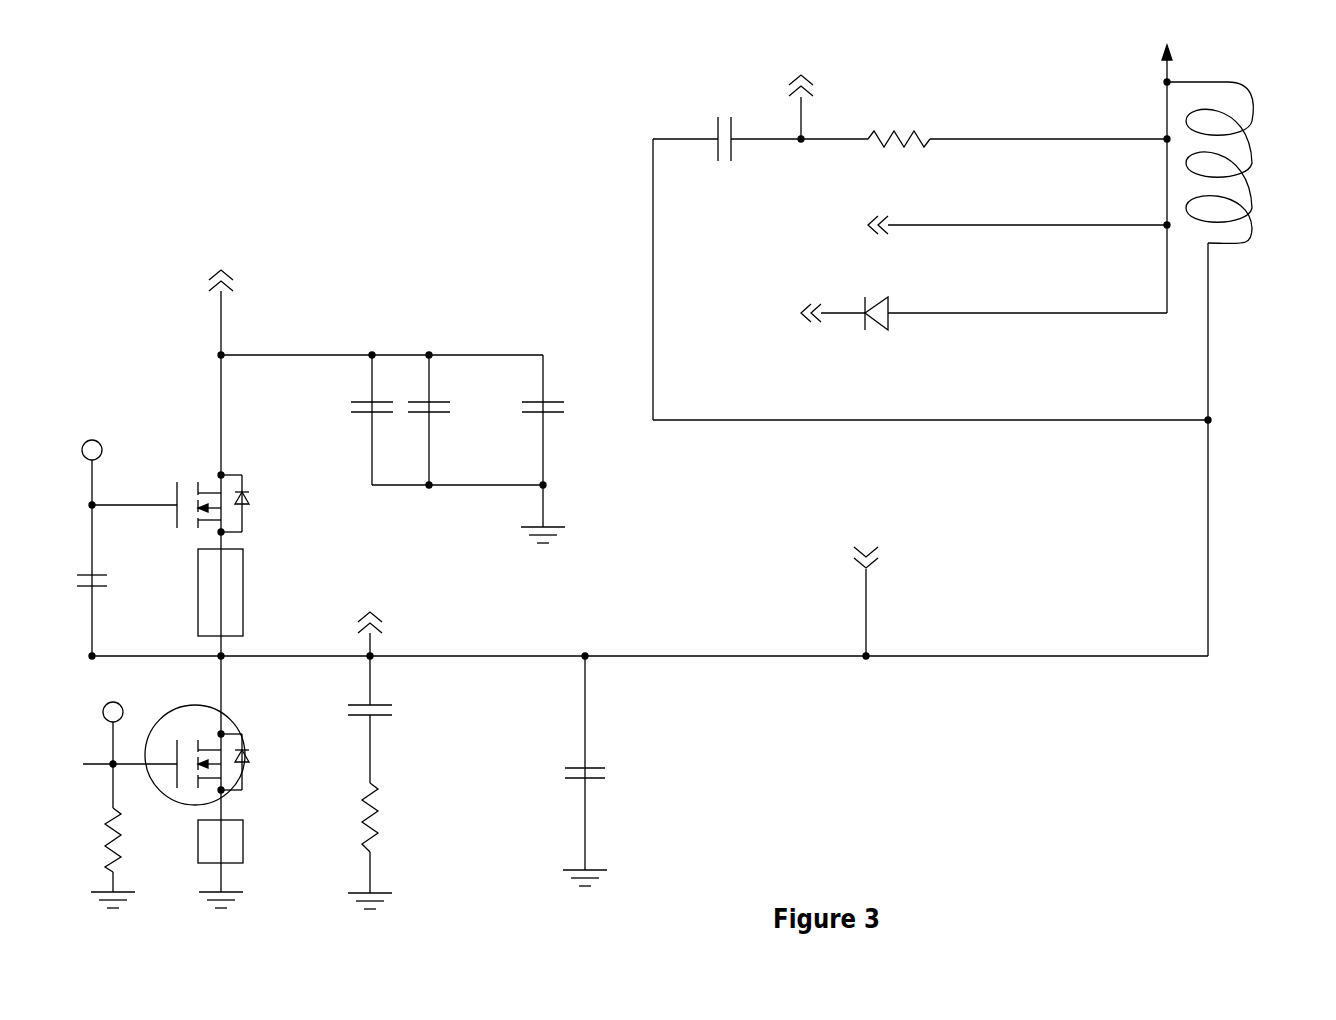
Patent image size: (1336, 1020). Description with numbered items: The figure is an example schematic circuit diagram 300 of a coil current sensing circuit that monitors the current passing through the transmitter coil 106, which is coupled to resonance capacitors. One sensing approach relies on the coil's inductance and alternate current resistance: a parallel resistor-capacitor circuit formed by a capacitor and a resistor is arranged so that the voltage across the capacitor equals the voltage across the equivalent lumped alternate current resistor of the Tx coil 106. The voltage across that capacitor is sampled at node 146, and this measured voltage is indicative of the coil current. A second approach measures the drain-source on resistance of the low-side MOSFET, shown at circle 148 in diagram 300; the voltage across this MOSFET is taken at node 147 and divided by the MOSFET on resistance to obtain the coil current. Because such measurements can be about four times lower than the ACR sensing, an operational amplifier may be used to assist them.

The schematic circuit diagram 300 is at (446, 48).
The transmitter coil 106 is at (1313, 165).
The node 146 is at (747, 48).
The node 147 is at (443, 570).
The circle 148 is at (178, 706).